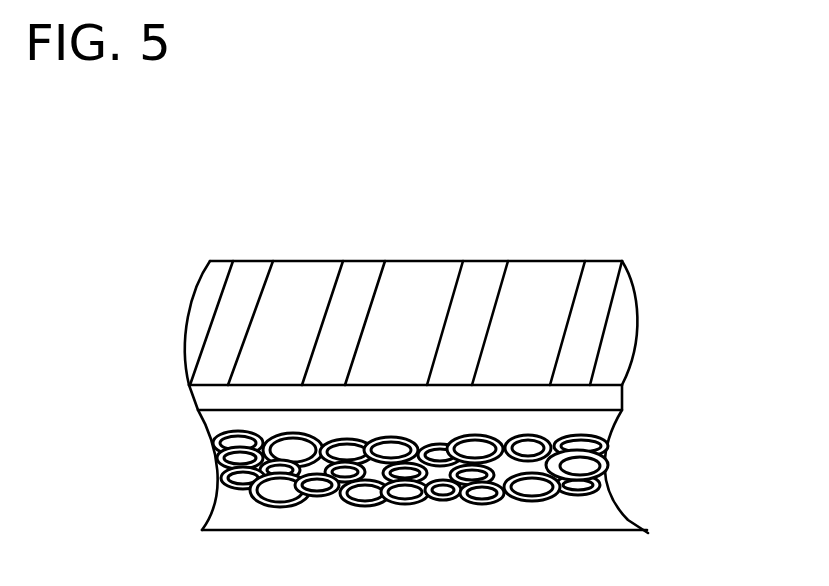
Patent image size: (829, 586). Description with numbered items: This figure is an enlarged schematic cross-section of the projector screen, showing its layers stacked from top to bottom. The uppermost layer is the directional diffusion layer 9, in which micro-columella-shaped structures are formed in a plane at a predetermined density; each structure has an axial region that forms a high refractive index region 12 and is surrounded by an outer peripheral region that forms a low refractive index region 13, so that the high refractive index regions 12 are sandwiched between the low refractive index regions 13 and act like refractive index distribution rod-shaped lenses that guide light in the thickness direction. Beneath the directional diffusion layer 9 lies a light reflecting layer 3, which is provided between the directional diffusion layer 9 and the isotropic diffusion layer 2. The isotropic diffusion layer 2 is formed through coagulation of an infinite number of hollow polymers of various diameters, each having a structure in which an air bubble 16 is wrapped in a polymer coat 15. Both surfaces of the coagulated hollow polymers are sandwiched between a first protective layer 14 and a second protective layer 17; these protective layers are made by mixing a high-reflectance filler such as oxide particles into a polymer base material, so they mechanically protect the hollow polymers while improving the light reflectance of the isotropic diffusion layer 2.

The isotropic diffusion layer 2 is at (483, 469).
The light reflecting layer 3 is at (600, 400).
The directional diffusion layer 9 is at (445, 238).
The high refractive index region 12 is at (528, 292).
The low refractive index region 13 is at (607, 277).
The first protective layer 14 is at (462, 463).
The polymer coat 15 is at (613, 462).
The air bubble 16 is at (573, 467).
The second protective layer 17 is at (464, 529).